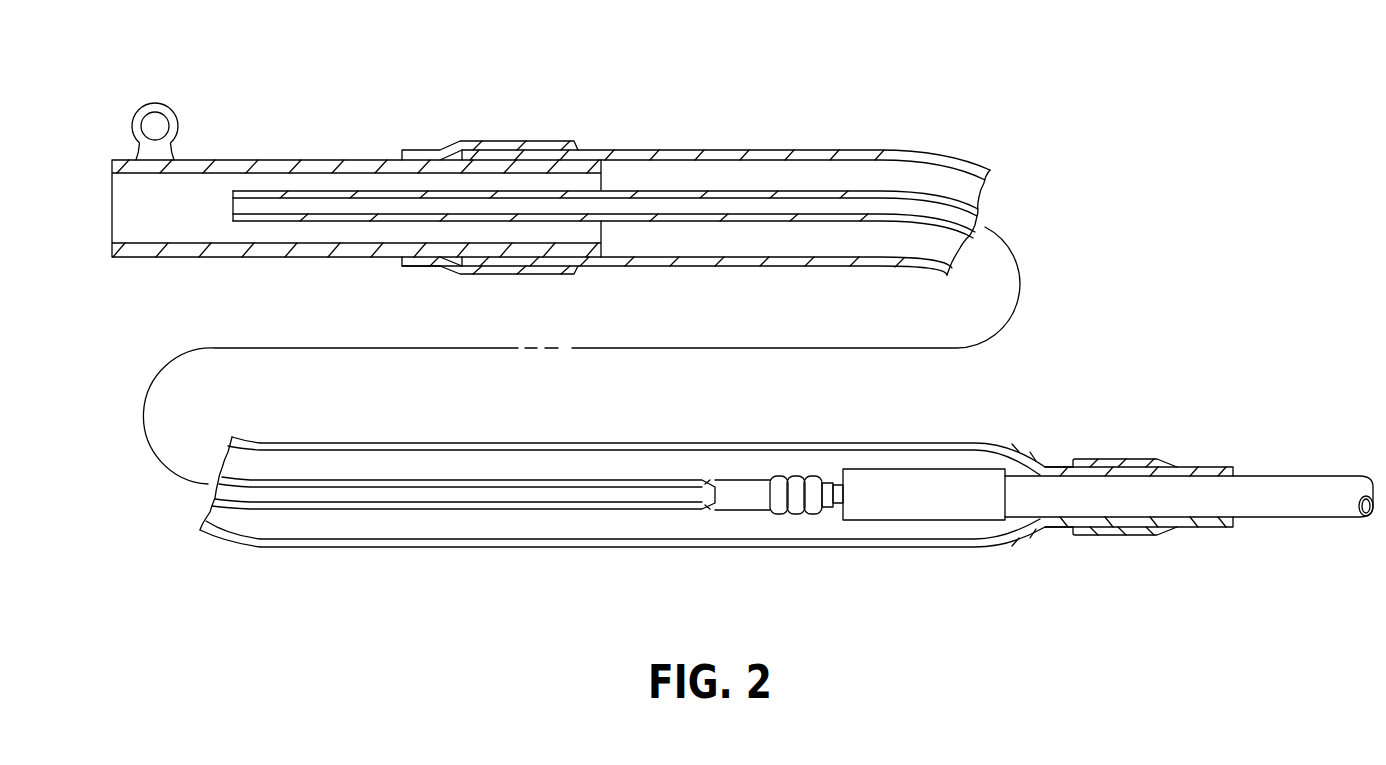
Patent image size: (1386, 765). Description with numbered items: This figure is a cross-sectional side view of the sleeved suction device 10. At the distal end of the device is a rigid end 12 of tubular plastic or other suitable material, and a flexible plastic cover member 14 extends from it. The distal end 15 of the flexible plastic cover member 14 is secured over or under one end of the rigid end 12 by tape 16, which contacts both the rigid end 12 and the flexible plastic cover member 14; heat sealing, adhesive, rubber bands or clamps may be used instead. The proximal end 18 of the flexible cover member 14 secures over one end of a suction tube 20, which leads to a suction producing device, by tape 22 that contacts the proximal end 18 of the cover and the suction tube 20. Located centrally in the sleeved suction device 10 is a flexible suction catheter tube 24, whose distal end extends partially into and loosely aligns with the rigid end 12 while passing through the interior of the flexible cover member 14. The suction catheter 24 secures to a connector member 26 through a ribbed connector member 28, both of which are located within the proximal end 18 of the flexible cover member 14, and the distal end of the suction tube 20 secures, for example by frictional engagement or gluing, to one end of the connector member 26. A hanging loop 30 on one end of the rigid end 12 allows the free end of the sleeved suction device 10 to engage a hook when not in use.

The sleeved suction device 10 is at (1020, 144).
The rigid end 12 is at (315, 168).
The flexible plastic cover member 14 is at (705, 155).
The distal end of the flexible plastic cover member 15 is at (625, 157).
The tape 16 is at (537, 148).
The proximal end of the flexible cover member 18 is at (990, 444).
The suction tube 20 is at (1280, 490).
The tape 22 is at (1135, 459).
The flexible suction catheter tube 24 is at (748, 500).
The connector member 26 is at (962, 522).
The ribbed connector member 28 is at (838, 489).
The hanging loop 30 is at (158, 110).